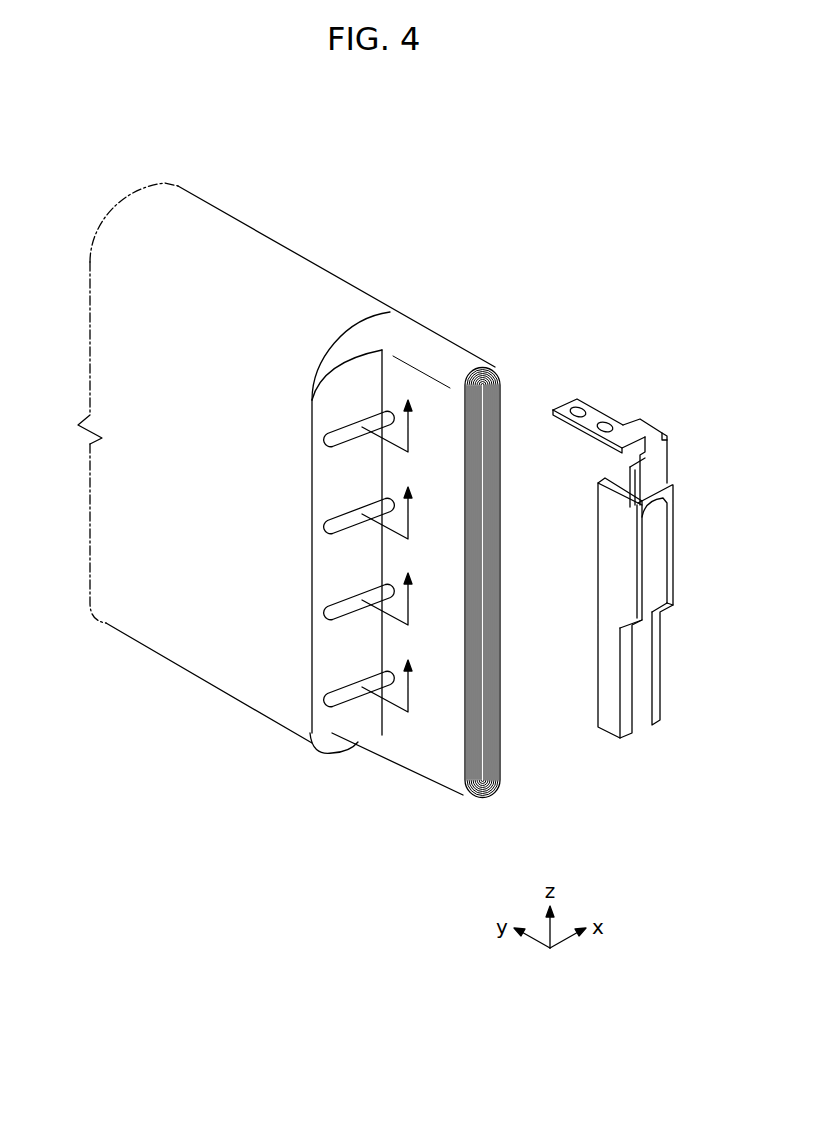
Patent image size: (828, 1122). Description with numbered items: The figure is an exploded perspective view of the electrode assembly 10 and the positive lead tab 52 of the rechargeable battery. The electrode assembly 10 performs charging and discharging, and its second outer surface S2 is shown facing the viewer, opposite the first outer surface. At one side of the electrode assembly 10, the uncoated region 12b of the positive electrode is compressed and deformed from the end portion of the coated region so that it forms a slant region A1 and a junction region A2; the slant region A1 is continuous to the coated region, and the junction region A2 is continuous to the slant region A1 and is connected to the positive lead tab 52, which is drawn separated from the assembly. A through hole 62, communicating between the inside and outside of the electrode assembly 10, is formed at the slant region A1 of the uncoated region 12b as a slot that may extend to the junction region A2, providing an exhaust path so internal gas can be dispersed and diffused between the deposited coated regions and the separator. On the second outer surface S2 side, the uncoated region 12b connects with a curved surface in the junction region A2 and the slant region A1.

The electrode assembly 10 is at (293, 242).
The positive lead tab 52 is at (633, 396).
The through hole 62 is at (327, 610).
The second outer surface S2 is at (224, 479).
The slant region A1 is at (356, 716).
The junction region A2 is at (404, 736).
The uncoated region 12b is at (397, 827).